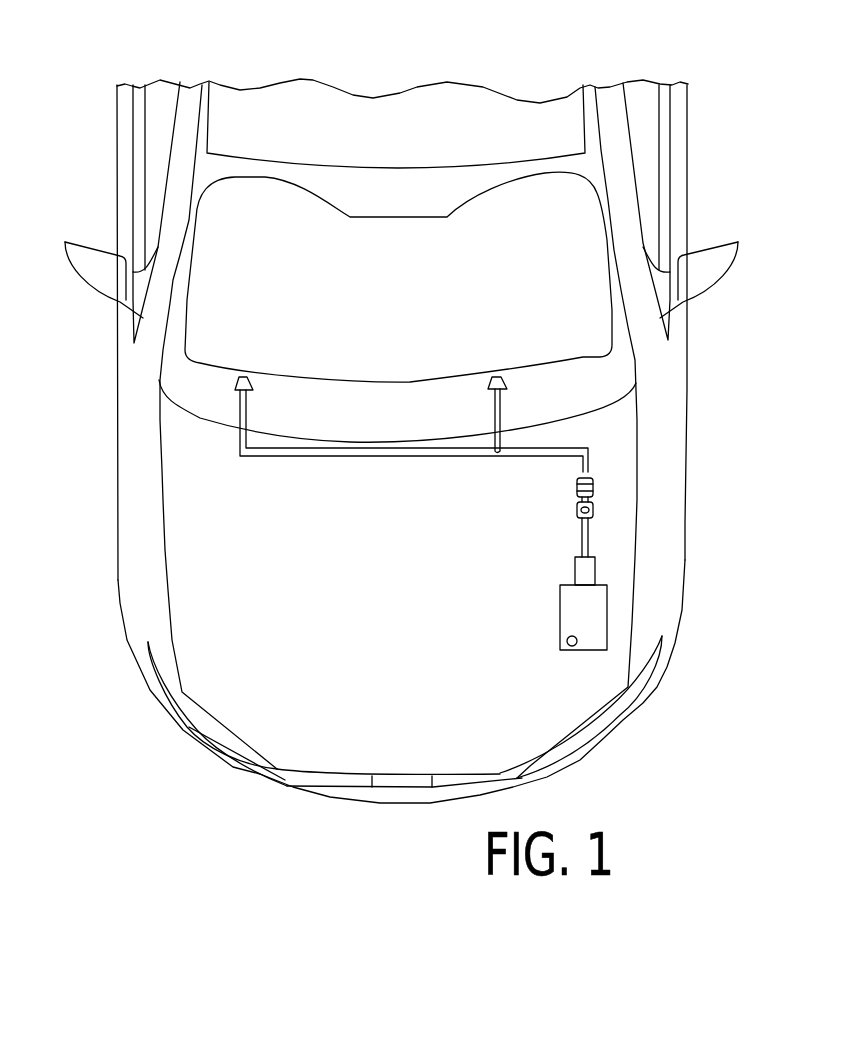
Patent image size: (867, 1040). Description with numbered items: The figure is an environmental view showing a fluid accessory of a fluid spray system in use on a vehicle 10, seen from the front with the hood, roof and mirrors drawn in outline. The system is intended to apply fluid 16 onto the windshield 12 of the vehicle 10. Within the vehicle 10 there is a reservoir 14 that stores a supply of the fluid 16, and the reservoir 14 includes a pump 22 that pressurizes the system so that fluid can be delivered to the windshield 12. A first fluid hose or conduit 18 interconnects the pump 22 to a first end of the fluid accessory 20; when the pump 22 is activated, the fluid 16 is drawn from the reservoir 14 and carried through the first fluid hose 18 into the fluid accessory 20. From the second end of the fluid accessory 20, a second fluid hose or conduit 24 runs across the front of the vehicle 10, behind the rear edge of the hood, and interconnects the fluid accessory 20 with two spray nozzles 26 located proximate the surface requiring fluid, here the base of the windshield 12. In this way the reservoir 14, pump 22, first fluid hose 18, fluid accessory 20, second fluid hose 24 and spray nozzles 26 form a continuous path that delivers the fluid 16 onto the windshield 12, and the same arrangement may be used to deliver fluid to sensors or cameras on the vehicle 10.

The vehicle 10 is at (145, 583).
The windshield 12 is at (373, 267).
The reservoir 14 is at (522, 627).
The fluid 16 is at (572, 605).
The first fluid hose 18 is at (590, 553).
The fluid accessory 20 is at (590, 512).
The pump 22 is at (573, 567).
The second fluid hose 24 is at (588, 452).
The spray nozzle 26 is at (235, 388).